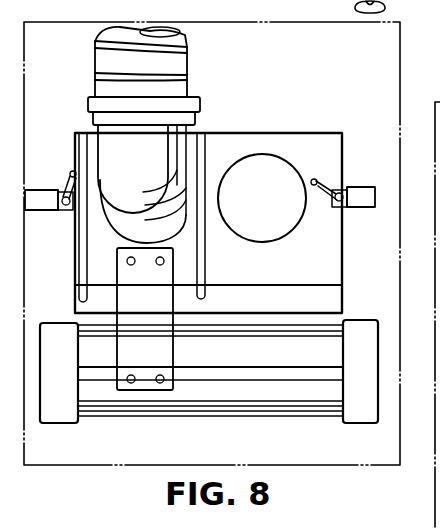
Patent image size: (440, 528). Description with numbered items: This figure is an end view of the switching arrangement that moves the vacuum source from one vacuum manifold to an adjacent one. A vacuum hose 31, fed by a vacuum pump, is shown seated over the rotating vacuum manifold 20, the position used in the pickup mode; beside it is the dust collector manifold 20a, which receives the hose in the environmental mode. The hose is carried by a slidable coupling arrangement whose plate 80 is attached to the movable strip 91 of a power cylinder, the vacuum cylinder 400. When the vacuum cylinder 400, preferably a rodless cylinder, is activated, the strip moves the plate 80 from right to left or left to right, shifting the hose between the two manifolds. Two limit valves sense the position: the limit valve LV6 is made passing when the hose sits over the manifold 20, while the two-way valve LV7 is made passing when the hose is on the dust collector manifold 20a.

The vacuum hose 31 is at (188, 66).
The dust collector manifold 20a is at (285, 145).
The rotating vacuum manifold 20 is at (112, 224).
The limit valve LV6 is at (40, 189).
The two-way valve LV7 is at (361, 186).
The plate 80 is at (80, 323).
The movable strip 91 is at (285, 373).
The vacuum cylinder 400 is at (123, 420).